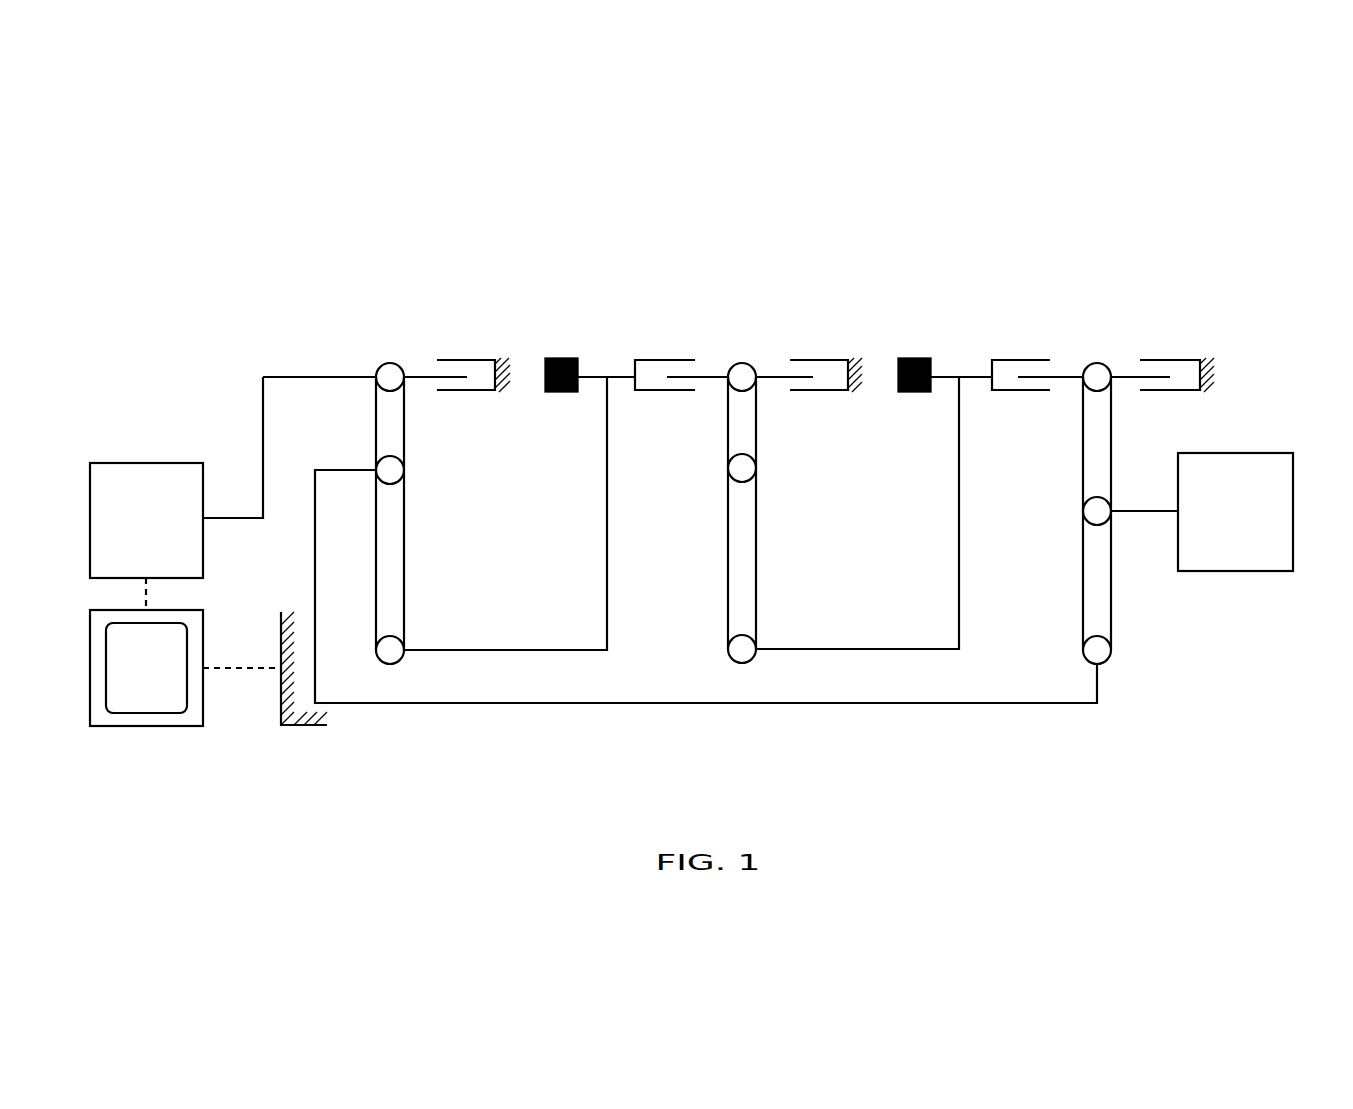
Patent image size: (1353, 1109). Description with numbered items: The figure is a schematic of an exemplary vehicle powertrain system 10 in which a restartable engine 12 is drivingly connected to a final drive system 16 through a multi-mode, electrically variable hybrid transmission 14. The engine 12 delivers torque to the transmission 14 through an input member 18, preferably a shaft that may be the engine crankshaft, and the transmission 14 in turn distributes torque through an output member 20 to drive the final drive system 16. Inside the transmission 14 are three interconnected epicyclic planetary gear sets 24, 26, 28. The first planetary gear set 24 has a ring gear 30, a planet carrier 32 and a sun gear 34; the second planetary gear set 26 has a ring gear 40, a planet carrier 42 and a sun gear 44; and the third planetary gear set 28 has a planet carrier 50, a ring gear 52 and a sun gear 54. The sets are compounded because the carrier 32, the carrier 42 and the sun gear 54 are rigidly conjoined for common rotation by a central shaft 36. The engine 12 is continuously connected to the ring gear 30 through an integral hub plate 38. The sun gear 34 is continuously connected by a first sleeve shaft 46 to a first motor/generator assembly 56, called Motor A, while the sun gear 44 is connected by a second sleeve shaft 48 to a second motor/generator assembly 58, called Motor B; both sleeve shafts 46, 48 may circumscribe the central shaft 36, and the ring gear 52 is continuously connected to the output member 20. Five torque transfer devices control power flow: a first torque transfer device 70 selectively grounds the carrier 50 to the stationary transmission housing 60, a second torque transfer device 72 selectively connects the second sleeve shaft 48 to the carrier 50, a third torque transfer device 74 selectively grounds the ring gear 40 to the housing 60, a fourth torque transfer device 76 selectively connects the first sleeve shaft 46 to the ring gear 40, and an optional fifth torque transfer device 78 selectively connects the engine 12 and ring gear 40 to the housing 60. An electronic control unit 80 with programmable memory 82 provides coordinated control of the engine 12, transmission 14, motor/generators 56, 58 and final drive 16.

The vehicle powertrain system 10 is at (152, 335).
The engine 12 is at (90, 520).
The hybrid transmission 14 is at (613, 312).
The final drive system 16 is at (1293, 510).
The input member 18 is at (238, 518).
The transmission output member 20 is at (1138, 511).
The first planetary gear set 24 is at (482, 512).
The second planetary gear set 26 is at (815, 505).
The third planetary gear set 28 is at (1033, 512).
The first member of first planetary gear set 30 is at (390, 362).
The second member of first planetary gear set 32 is at (404, 470).
The third member of first planetary gear set 34 is at (393, 664).
The central shaft 36 is at (527, 703).
The integral hub plate 38 is at (312, 377).
The first member of second planetary gear set 40 is at (742, 362).
The second member of second planetary gear set 42 is at (756, 468).
The third member of second planetary gear set 44 is at (746, 662).
The first sleeve shaft 46 is at (568, 650).
The second sleeve shaft 48 is at (925, 649).
The first member of third planetary gear set 50 is at (1097, 362).
The second member of third planetary gear set 52 is at (1083, 511).
The third member of third planetary gear set 54 is at (1083, 650).
The first motor/generator assembly 56 is at (562, 392).
The second motor/generator assembly 58 is at (917, 392).
The transmission housing 60 is at (500, 358).
The first torque transfer device 70 is at (1203, 405).
The second torque transfer device 72 is at (1040, 342).
The third torque transfer device 74 is at (860, 405).
The fourth torque transfer device 76 is at (652, 340).
The fifth torque transfer device 78 is at (505, 405).
The electronic control unit 80 is at (90, 633).
The programmable memory 82 is at (106, 695).